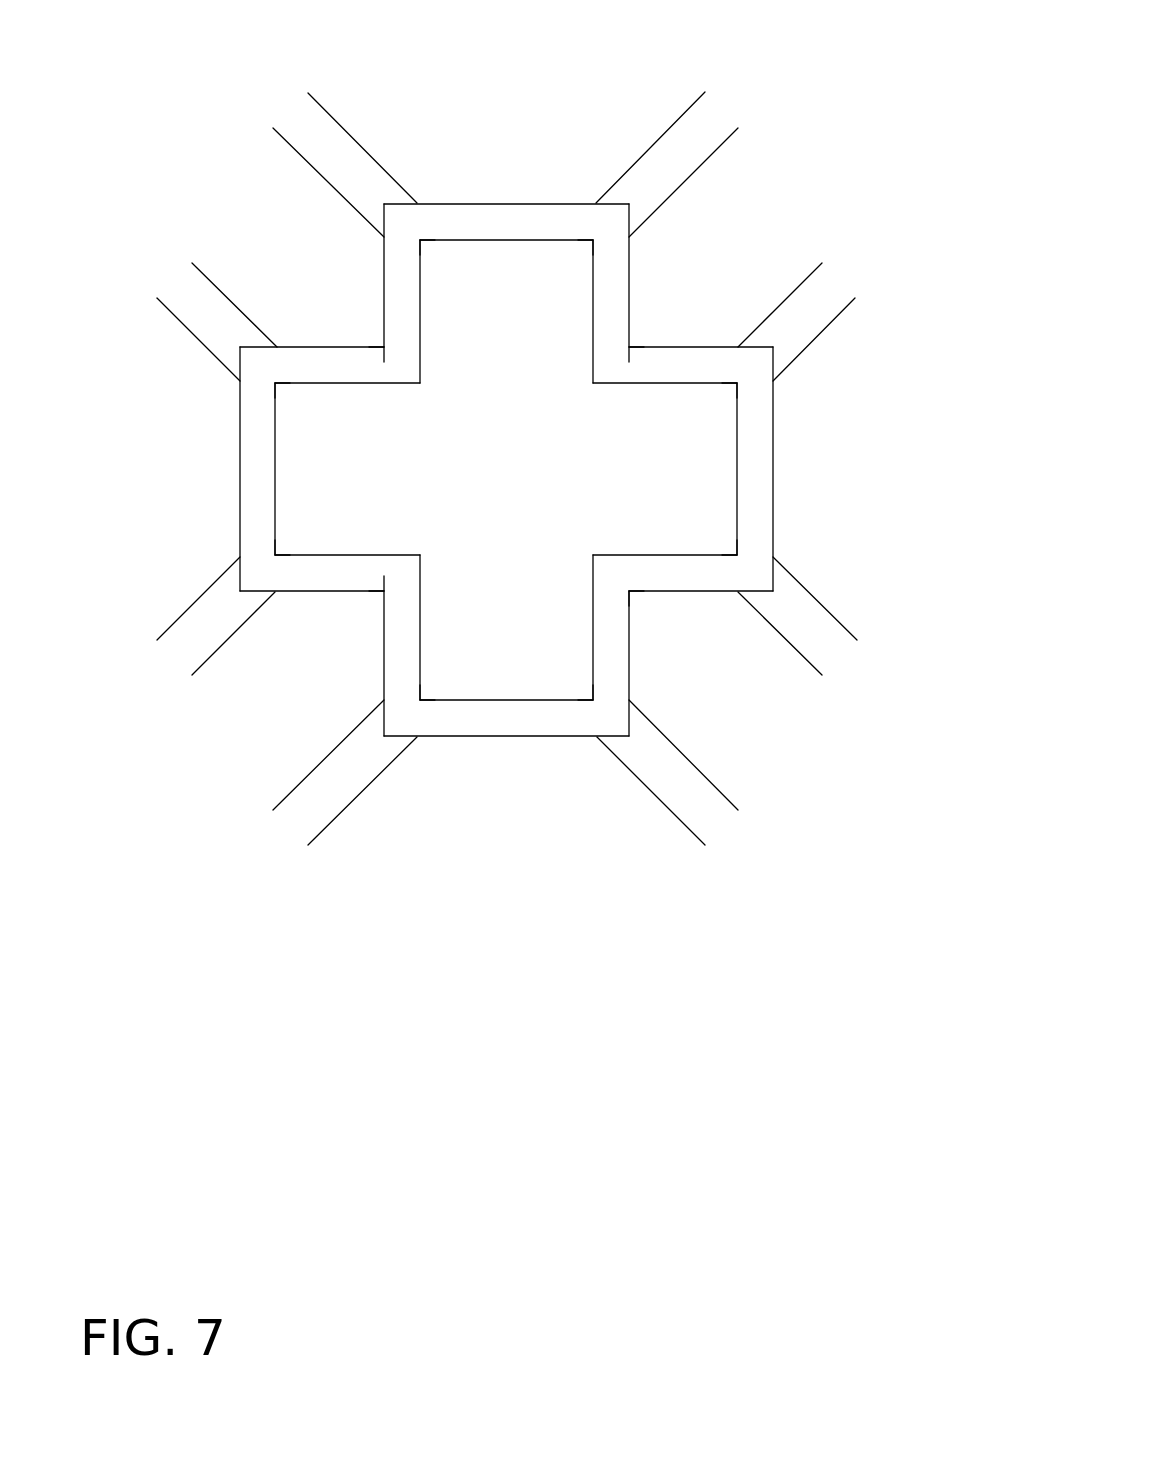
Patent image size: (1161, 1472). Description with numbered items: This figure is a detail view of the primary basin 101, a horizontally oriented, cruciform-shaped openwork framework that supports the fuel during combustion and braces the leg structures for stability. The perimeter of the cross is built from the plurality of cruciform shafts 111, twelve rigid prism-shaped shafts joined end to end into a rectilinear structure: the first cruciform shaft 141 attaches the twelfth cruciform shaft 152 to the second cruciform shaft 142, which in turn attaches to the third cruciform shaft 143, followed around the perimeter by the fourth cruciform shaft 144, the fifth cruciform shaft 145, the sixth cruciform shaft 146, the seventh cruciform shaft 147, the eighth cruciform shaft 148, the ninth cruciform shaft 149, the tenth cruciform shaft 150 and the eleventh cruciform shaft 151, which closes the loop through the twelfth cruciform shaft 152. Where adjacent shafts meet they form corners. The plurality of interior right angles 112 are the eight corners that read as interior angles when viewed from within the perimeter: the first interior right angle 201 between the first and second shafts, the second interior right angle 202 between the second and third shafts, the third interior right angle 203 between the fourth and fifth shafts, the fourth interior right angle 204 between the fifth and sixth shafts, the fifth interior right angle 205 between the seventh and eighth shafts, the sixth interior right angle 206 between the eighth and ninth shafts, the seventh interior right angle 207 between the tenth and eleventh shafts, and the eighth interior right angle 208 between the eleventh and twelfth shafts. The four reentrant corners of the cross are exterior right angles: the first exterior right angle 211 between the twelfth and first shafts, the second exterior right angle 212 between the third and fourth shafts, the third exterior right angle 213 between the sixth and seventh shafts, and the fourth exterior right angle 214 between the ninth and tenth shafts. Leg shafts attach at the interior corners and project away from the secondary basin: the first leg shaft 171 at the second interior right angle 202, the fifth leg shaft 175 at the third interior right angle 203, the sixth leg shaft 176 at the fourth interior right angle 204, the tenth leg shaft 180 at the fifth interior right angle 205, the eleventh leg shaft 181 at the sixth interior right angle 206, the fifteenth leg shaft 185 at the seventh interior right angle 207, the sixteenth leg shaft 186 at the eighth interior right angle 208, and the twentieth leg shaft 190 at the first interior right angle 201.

The primary basin 101 is at (116, 158).
The plurality of cruciform shafts 111 is at (436, 962).
The plurality of interior right angles 112 is at (678, 957).
The first cruciform shaft 141 is at (322, 585).
The second cruciform shaft 142 is at (253, 525).
The third cruciform shaft 143 is at (307, 360).
The fourth cruciform shaft 144 is at (400, 262).
The fifth cruciform shaft 145 is at (490, 223).
The sixth cruciform shaft 146 is at (618, 270).
The seventh cruciform shaft 147 is at (707, 360).
The eighth cruciform shaft 148 is at (760, 470).
The ninth cruciform shaft 149 is at (707, 583).
The tenth cruciform shaft 150 is at (617, 665).
The eleventh cruciform shaft 151 is at (510, 723).
The twelfth cruciform shaft 152 is at (397, 665).
The first leg shaft 171 is at (205, 320).
The fifth leg shaft 175 is at (317, 116).
The sixth leg shaft 176 is at (683, 135).
The tenth leg shaft 180 is at (827, 310).
The eleventh leg shaft 181 is at (823, 613).
The fifteenth leg shaft 185 is at (682, 787).
The sixteenth leg shaft 186 is at (323, 817).
The twentieth leg shaft 190 is at (197, 617).
The first interior right angle 201 is at (278, 560).
The second interior right angle 202 is at (278, 388).
The third interior right angle 203 is at (436, 248).
The fourth interior right angle 204 is at (592, 244).
The fifth interior right angle 205 is at (744, 388).
The sixth interior right angle 206 is at (744, 558).
The seventh interior right angle 207 is at (594, 704).
The eighth interior right angle 208 is at (426, 704).
The first exterior right angle 211 is at (373, 600).
The second exterior right angle 212 is at (383, 343).
The third exterior right angle 213 is at (640, 338).
The fourth exterior right angle 214 is at (629, 591).